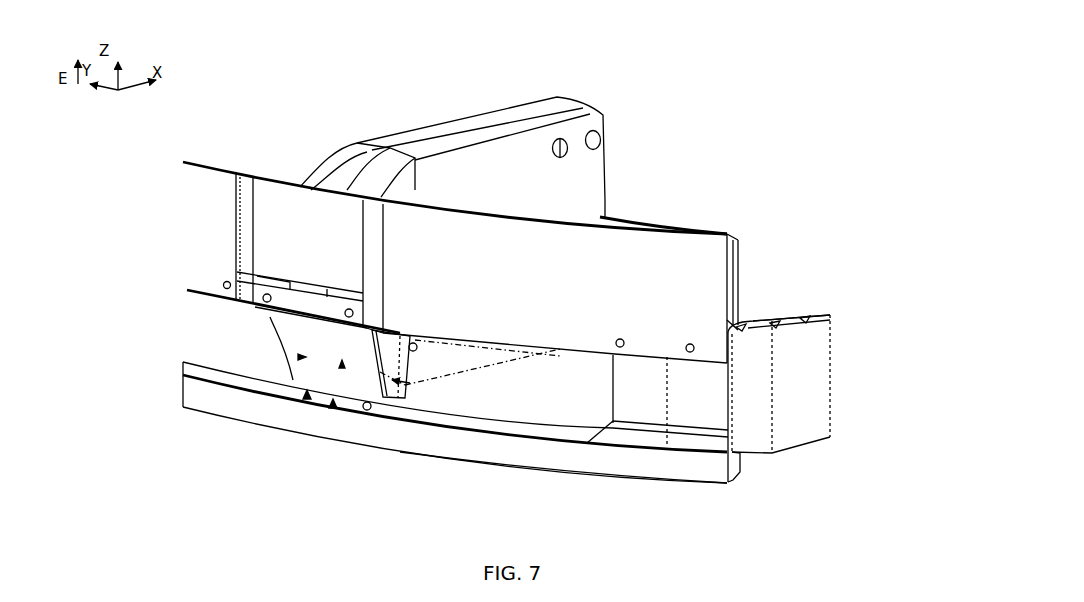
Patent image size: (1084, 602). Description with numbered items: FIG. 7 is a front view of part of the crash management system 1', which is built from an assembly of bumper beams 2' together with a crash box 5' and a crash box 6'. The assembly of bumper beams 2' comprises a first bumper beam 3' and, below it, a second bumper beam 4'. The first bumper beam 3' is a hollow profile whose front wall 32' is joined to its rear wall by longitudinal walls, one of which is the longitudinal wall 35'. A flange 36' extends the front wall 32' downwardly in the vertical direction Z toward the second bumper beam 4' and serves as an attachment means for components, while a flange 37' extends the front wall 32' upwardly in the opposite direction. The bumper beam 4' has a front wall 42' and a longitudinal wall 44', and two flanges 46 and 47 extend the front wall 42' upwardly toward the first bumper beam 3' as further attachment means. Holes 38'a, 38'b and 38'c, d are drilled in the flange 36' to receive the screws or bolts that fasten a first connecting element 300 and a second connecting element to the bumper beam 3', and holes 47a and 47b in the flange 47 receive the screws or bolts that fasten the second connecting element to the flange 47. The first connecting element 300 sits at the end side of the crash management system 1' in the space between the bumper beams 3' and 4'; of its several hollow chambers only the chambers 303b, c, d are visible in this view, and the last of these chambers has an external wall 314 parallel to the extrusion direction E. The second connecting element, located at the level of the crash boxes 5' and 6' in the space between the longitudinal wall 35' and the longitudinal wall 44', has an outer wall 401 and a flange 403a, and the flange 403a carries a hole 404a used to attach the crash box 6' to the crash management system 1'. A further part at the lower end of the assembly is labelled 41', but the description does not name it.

The crash management system 1' is at (455, 122).
The assembly of bumper beams 2' is at (791, 161).
The first bumper beam 3' is at (406, 270).
The front wall 32' is at (249, 250).
The flange 36' is at (253, 311).
The holes 38'c, d is at (241, 312).
The crash box 5' is at (495, 157).
The flange 37' is at (669, 205).
The longitudinal wall 35' is at (777, 254).
The hollow chambers 303b, c, d is at (744, 320).
The external wall 314 is at (839, 332).
The first connecting element 300 is at (839, 386).
The lower corner piece 41' is at (774, 476).
The flange 46 is at (668, 442).
The hole 38'a is at (725, 435).
The hole 38'b is at (624, 436).
The crash box 6' is at (456, 364).
The hole 404a is at (400, 380).
The flange 403a is at (408, 390).
The longitudinal wall 44' is at (455, 394).
The second bumper beam 4' is at (409, 415).
The front wall 42' is at (421, 439).
The outer wall 401 is at (298, 357).
The flange 47 is at (333, 410).
The hole 47a is at (305, 400).
The hole 47b is at (370, 412).